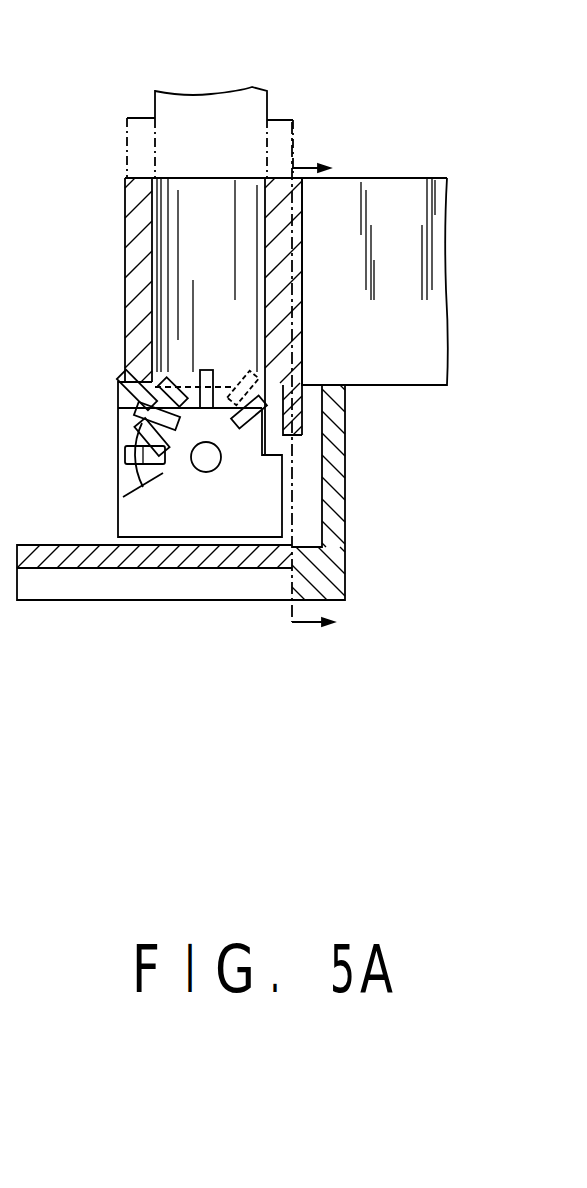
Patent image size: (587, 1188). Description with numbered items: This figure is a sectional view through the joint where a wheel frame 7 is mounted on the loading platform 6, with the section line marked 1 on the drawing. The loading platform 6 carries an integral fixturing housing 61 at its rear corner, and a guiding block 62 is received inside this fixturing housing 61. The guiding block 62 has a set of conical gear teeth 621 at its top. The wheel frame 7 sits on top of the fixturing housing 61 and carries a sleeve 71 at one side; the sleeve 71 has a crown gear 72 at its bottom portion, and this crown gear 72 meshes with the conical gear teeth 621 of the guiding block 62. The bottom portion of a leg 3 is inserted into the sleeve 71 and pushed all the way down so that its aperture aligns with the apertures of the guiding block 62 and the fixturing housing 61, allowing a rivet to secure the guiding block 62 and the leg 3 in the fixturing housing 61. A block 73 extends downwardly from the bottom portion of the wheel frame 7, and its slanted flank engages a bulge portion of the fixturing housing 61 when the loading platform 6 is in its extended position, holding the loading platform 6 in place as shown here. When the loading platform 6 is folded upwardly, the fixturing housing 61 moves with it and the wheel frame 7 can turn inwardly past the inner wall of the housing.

The leg 3 is at (210, 113).
The wheel frame 7 is at (383, 178).
The sleeve 71 is at (130, 212).
The crown gear 72 is at (127, 384).
The block 73 is at (305, 400).
The loading platform 6 is at (158, 562).
The fixturing housing 61 is at (310, 478).
The guiding block 62 is at (137, 506).
The conical gear teeth 621 is at (135, 418).
The handle 1 is at (310, 384).